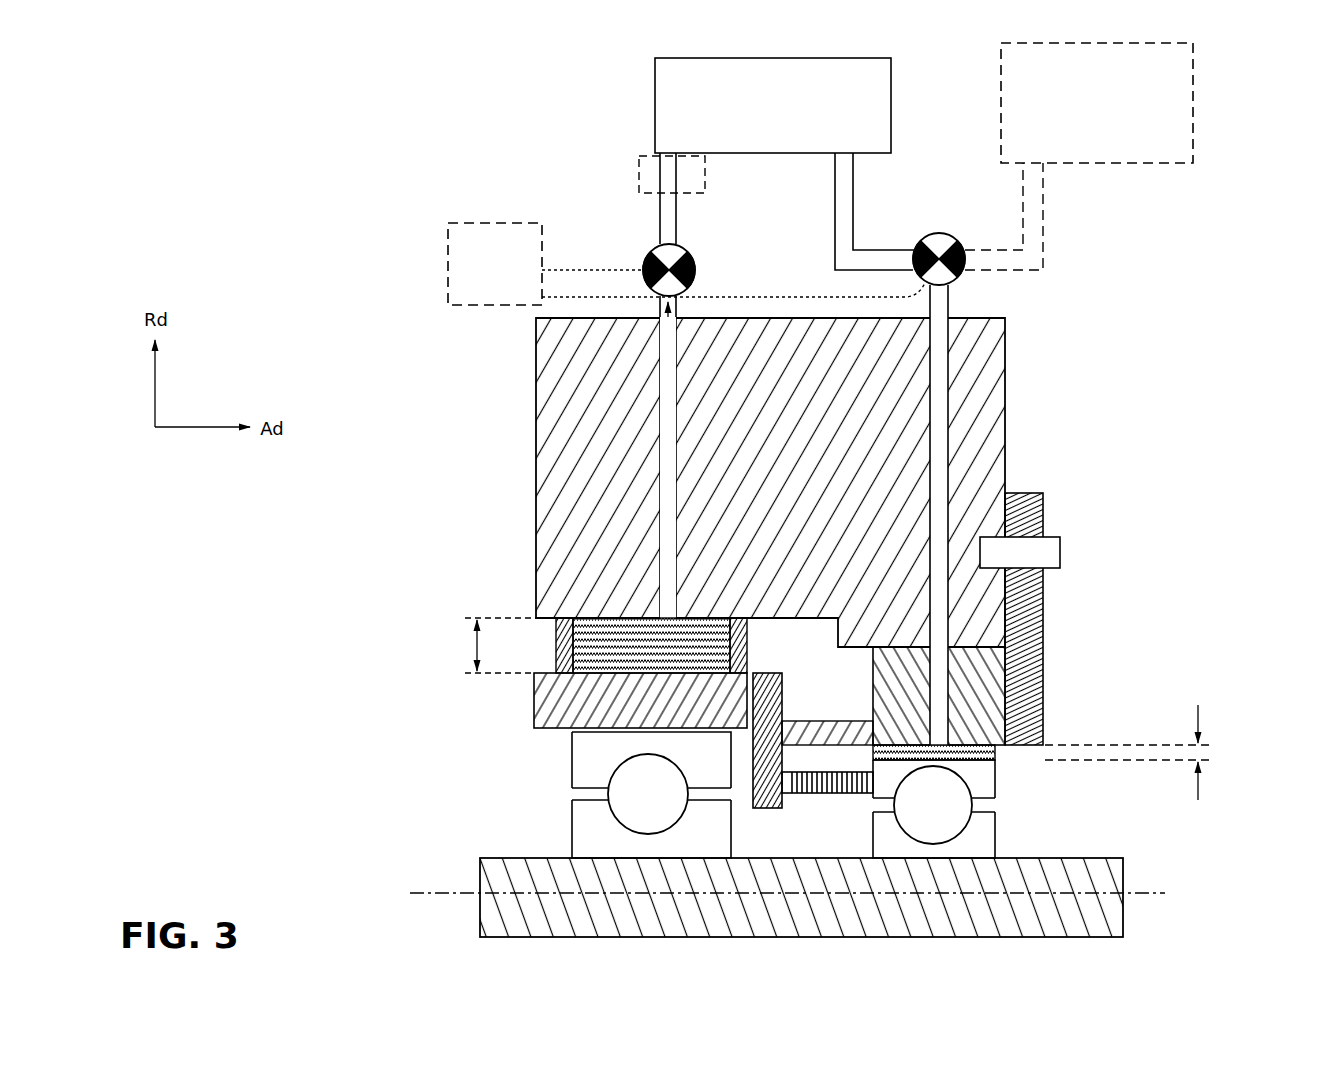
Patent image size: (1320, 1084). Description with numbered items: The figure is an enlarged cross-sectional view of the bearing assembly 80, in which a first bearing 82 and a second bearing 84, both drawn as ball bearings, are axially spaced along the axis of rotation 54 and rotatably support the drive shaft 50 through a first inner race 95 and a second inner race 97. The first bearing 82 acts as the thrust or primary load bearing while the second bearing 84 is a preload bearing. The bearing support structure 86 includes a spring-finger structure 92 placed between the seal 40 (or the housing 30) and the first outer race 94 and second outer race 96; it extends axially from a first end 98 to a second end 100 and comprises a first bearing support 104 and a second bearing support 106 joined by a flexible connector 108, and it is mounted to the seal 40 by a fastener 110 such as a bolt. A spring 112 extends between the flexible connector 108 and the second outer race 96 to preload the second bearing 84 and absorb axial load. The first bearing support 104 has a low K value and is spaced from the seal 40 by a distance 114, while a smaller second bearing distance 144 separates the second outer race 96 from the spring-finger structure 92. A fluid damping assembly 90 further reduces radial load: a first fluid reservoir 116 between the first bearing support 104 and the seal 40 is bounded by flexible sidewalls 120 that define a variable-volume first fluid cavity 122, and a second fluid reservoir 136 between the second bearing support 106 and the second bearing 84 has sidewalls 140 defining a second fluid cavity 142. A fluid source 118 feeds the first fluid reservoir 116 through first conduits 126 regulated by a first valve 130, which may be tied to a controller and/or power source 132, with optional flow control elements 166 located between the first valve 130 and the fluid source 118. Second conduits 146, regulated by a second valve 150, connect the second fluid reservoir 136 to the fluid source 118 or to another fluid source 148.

The housing 30 is at (1044, 463).
The seal 40 is at (1009, 440).
The drive shaft 50 is at (1123, 880).
The axis of rotation 54 is at (437, 888).
The bearing assembly 80 is at (446, 448).
The first bearing 82 is at (645, 868).
The second bearing 84 is at (940, 868).
The bearing support structure 86 is at (1048, 672).
The fluid damping assembly 90 is at (486, 118).
The spring-finger structure 92 is at (585, 847).
The first outer race 94 is at (572, 762).
The first inner race 95 is at (572, 828).
The second outer race 96 is at (997, 773).
The second inner race 97 is at (968, 861).
The first end 98 is at (534, 694).
The second end 100 is at (1046, 742).
The first bearing support 104 is at (563, 730).
The second bearing support 106 is at (970, 763).
The flexible connector 108 is at (748, 772).
The fastener 110 is at (1062, 549).
The spring 112 is at (818, 802).
The distance 114 is at (472, 652).
The first fluid reservoir 116 is at (553, 648).
The fluid source 118 is at (761, 127).
The sidewalls 120 is at (740, 616).
The first fluid cavity 122 is at (670, 660).
The first conduits 126 is at (656, 402).
The first valve 130 is at (650, 263).
The controller and/or power source 132 is at (455, 222).
The second fluid reservoir 136 is at (890, 774).
The sidewalls 140 is at (878, 752).
The second fluid cavity 142 is at (927, 758).
The second bearing distance 144 is at (1205, 779).
The second conduits 146 is at (958, 370).
The another fluid source 148 is at (1080, 127).
The second valve 150 is at (939, 233).
The flow control elements 166 is at (708, 177).